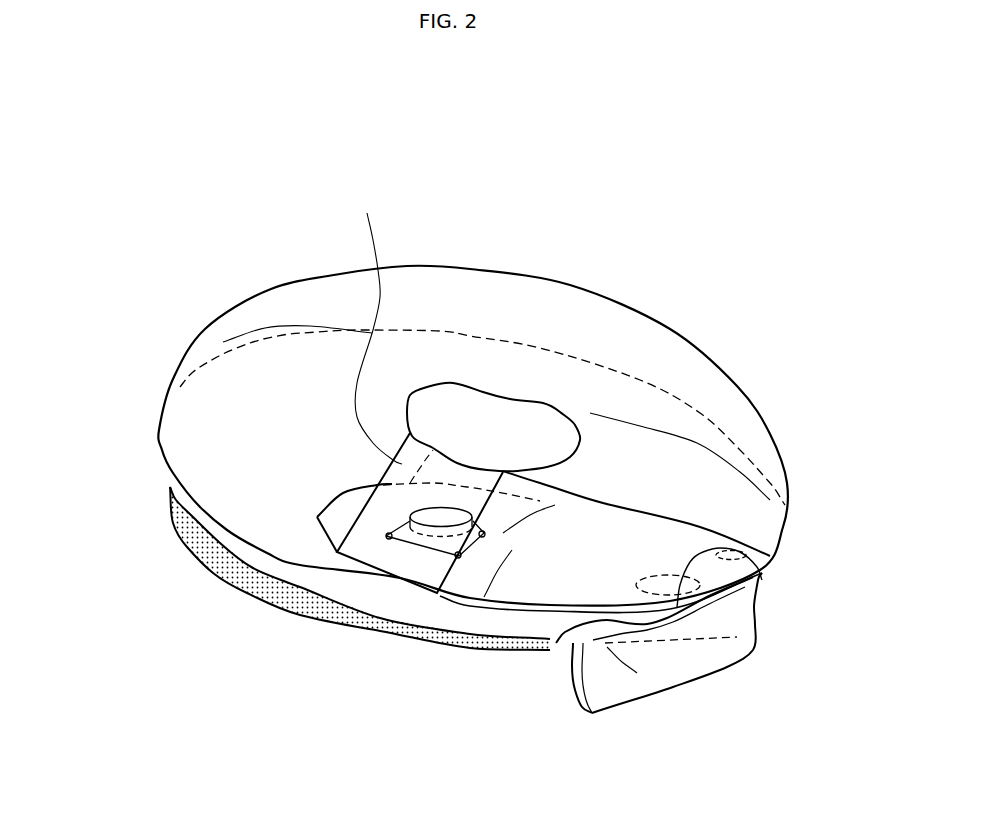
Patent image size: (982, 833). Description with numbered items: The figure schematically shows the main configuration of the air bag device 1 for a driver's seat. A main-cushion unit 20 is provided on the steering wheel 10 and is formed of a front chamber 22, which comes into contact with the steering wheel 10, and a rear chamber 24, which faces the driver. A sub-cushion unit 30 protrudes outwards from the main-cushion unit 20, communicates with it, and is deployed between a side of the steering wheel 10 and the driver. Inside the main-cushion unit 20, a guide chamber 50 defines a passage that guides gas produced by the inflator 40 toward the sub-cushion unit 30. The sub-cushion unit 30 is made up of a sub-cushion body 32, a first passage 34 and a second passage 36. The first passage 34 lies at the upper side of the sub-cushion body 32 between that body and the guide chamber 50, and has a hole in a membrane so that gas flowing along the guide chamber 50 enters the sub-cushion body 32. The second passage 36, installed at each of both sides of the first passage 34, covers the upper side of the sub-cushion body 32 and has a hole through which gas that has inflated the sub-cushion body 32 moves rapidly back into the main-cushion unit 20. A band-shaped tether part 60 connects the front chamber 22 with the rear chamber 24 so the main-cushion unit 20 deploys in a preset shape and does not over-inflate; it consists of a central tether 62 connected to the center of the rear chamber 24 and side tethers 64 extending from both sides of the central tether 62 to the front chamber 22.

The air bag device 1 is at (607, 203).
The steering wheel 10 is at (322, 612).
The main-cushion unit 20 is at (117, 326).
The front chamber 22 is at (170, 513).
The rear chamber 24 is at (207, 423).
The sub-cushion unit 30 is at (765, 657).
The sub-cushion body 32 is at (683, 668).
The first passage 34 is at (700, 608).
The second passage 36 is at (590, 621).
The inflator 40 is at (440, 520).
The guide chamber 50 is at (637, 550).
The tether part 60 is at (453, 190).
The central tether 62 is at (458, 385).
The side tether 64 is at (392, 337).